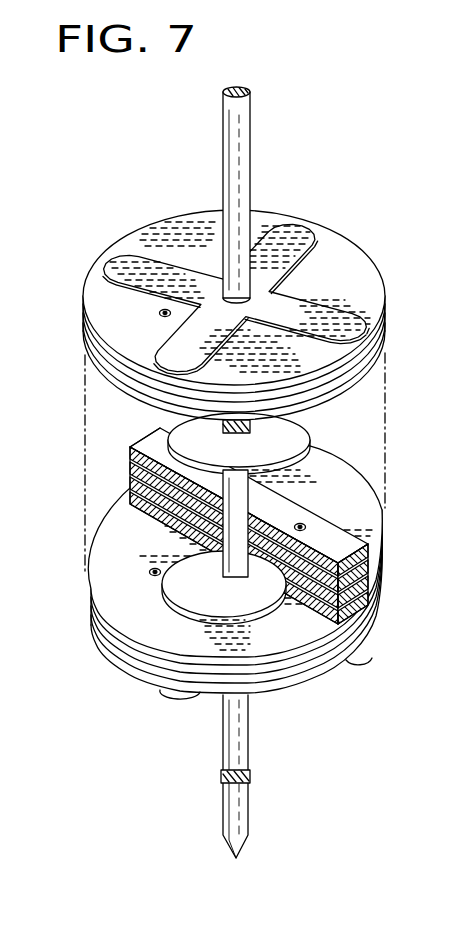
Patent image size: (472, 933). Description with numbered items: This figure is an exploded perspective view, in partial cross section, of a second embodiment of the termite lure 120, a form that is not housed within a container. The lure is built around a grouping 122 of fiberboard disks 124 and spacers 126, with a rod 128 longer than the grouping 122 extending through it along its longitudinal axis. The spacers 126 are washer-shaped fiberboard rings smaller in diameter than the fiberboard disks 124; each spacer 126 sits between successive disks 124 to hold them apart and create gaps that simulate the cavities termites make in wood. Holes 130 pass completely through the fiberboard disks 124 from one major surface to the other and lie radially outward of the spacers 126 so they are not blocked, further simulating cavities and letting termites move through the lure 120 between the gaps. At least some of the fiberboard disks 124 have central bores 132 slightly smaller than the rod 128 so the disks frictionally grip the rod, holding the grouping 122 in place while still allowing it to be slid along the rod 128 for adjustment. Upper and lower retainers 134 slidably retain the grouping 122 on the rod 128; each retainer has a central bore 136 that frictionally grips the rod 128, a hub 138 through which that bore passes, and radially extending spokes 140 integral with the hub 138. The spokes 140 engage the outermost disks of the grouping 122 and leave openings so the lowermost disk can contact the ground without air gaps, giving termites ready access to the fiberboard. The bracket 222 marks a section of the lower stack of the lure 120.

The termite lure 120 is at (353, 174).
The grouping of fiberboard disks and spacers 122 is at (105, 668).
The fiberboard disk 124 is at (150, 402).
The spacer 126 is at (306, 443).
The rod 128 is at (222, 150).
The hole 130 is at (162, 312).
The central bore 132 is at (250, 514).
The retainer 134 is at (281, 224).
The central bore 136 is at (292, 268).
The hub 138 is at (250, 318).
The spoke 140 is at (352, 316).
The lower stack section 222 is at (466, 654).